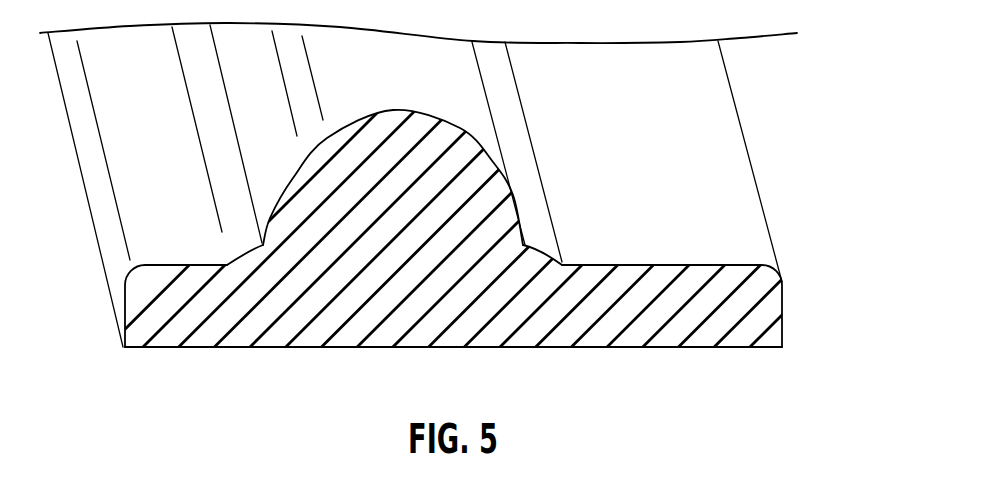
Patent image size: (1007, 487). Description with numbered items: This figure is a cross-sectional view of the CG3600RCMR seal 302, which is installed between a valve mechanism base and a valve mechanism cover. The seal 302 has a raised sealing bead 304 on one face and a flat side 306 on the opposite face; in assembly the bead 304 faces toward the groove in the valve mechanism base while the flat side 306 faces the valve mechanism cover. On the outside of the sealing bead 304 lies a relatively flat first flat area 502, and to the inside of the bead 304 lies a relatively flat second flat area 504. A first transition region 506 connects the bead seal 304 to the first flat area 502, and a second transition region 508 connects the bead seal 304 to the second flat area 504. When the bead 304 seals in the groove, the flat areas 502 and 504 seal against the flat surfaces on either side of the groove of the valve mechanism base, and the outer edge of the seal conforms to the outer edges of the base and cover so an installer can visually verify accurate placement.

The CG3600RCMR seal 302 is at (803, 102).
The sealing bead 304 is at (393, 108).
The flat side 306 is at (560, 348).
The first flat area 502 is at (672, 264).
The second flat area 504 is at (168, 265).
The first transition region 506 is at (543, 255).
The second transition region 508 is at (246, 248).